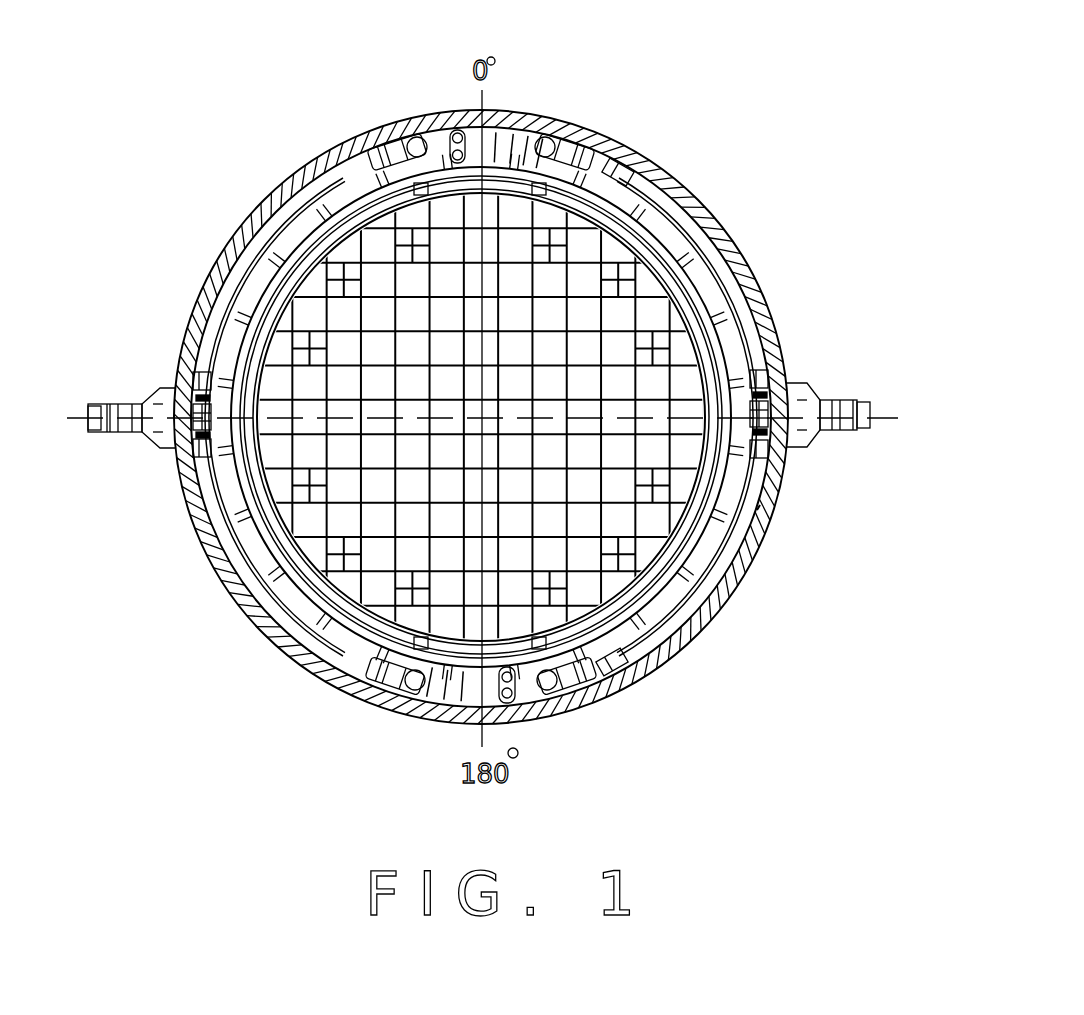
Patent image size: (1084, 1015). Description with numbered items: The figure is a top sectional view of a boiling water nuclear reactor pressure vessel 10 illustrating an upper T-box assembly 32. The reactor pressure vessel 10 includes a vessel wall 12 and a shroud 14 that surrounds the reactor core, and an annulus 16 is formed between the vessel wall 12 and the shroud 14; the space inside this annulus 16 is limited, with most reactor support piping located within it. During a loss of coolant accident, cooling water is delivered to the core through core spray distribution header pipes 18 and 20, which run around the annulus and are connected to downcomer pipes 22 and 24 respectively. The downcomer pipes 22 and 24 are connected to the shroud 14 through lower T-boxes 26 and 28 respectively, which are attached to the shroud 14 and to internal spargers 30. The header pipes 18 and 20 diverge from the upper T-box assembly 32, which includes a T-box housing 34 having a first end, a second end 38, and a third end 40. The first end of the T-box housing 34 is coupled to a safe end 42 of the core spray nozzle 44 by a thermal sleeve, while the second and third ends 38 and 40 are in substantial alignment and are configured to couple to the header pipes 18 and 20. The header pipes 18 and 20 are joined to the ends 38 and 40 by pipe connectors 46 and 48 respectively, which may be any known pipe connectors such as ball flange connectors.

The reactor pressure vessel 10 is at (806, 114).
The vessel wall 12 is at (728, 223).
The shroud 14 is at (500, 160).
The annulus 16 is at (520, 147).
The core spray distribution header pipe 18 is at (755, 288).
The core spray distribution header pipe 20 is at (722, 592).
The downcomer pipe 22 is at (555, 135).
The downcomer pipe 24 is at (567, 693).
The lower T-box 26 is at (540, 133).
The lower T-box 28 is at (530, 683).
The internal sparger 30 is at (630, 187).
The upper T-box assembly 32 is at (770, 408).
The T-box housing 34 is at (790, 447).
The second end 38 is at (793, 390).
The third end 40 is at (775, 458).
The safe end 42 is at (868, 398).
The core spray nozzle 44 is at (838, 400).
The pipe connector 46 is at (770, 372).
The pipe connector 48 is at (768, 508).